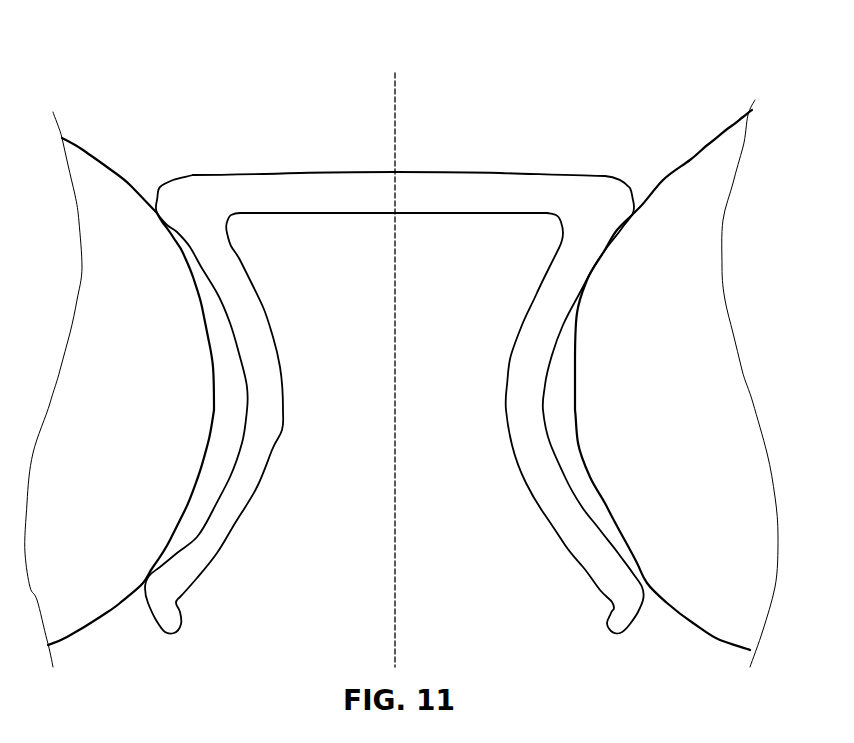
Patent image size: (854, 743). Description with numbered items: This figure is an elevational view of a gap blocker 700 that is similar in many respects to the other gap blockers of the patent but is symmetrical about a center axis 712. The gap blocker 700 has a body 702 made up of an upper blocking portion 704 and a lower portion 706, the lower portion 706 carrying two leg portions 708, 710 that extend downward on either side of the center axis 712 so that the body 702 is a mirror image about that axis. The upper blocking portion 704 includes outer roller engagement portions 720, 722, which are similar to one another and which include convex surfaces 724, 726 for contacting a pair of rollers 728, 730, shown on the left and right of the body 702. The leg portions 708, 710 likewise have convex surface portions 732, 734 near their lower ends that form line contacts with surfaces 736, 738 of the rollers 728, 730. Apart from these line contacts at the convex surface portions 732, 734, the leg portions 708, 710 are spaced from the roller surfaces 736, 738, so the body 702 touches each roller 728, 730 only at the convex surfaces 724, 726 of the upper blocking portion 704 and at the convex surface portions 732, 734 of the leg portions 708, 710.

The gap blocker 700 is at (407, 344).
The body 702 is at (477, 187).
The upper blocking portion 704 is at (337, 187).
The lower portion 706 is at (301, 636).
The leg portion 708 is at (260, 453).
The leg portion 710 is at (558, 497).
The center axis 712 is at (395, 105).
The outer roller engagement portion 720 is at (430, 152).
The outer roller engagement portion 722 is at (617, 168).
The convex surface 724 is at (156, 216).
The convex surface 726 is at (637, 218).
The roller 728 is at (95, 168).
The roller 730 is at (722, 150).
The convex surface portion 732 is at (150, 572).
The convex surface portion 734 is at (643, 582).
The roller surface 736 is at (72, 138).
The roller surface 738 is at (575, 395).